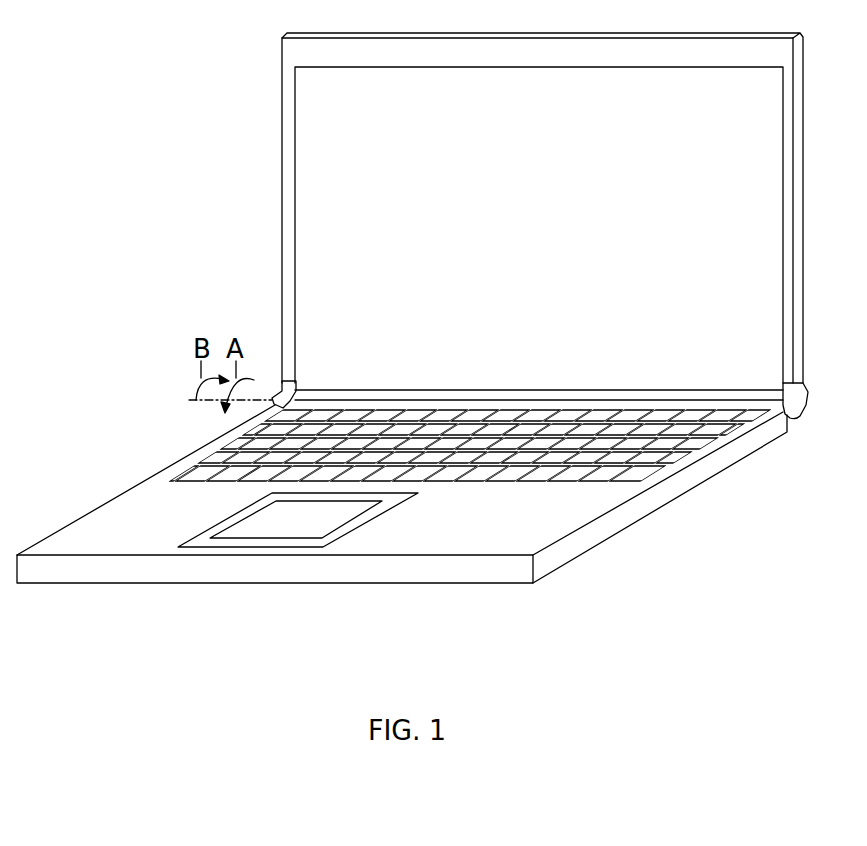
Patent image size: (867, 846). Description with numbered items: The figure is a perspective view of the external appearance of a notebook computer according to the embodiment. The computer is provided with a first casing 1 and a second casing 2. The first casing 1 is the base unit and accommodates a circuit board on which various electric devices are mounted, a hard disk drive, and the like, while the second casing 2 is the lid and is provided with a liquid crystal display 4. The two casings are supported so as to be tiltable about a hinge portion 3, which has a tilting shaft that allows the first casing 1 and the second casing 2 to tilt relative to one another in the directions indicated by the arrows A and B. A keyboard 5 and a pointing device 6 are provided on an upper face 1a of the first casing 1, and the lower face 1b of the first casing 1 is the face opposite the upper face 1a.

The first casing 1 is at (733, 455).
The upper face 1a is at (146, 518).
The lower face 1b is at (450, 596).
The second casing 2 is at (287, 258).
The hinge portion 3 is at (281, 393).
The liquid crystal display 4 is at (314, 127).
The keyboard 5 is at (244, 438).
The pointing device 6 is at (285, 520).